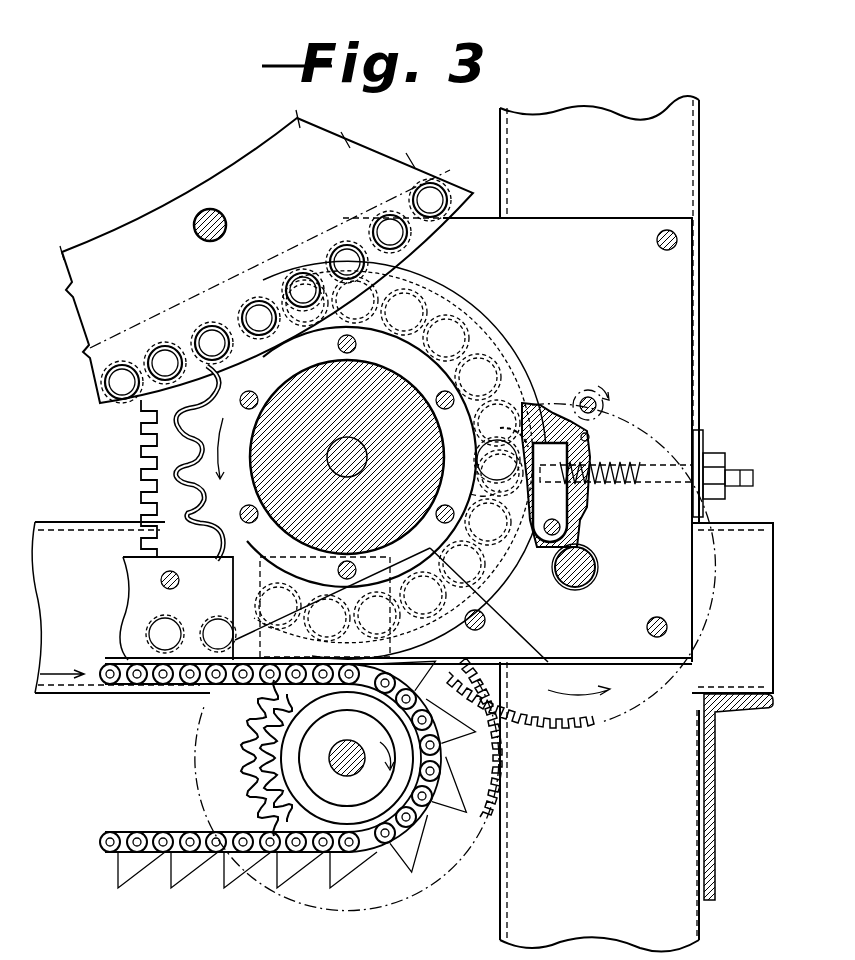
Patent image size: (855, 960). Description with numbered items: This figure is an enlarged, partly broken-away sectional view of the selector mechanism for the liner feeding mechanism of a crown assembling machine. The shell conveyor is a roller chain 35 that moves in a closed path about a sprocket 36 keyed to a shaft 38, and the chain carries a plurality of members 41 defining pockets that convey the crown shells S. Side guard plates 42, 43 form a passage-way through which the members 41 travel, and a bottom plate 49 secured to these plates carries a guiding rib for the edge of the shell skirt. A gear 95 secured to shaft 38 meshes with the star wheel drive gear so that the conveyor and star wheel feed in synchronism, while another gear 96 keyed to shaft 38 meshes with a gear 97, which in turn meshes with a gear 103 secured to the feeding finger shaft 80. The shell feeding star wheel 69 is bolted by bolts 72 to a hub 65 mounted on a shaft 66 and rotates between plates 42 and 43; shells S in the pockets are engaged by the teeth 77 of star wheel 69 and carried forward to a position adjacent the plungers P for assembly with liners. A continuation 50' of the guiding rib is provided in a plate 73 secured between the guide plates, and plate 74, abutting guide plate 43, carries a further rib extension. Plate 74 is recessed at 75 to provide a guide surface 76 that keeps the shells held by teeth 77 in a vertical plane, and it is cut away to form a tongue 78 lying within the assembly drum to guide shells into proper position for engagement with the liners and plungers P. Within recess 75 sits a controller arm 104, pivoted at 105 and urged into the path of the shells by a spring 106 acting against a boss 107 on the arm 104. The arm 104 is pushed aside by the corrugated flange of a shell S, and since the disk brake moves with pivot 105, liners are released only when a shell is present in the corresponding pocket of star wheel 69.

The tongue 78 is at (292, 258).
The plungers P is at (220, 335).
The plate 74 is at (477, 440).
The bolts 72 is at (250, 525).
The hub 65 is at (298, 385).
The shaft 66 is at (358, 458).
The shell feeding star wheel 69 is at (193, 478).
The side guard plate 42 is at (125, 566).
The side guard plate 43 is at (232, 602).
The shells S is at (165, 616).
The members 41 is at (214, 622).
The bottom plate 49 is at (115, 662).
The roller chain 35 is at (136, 838).
The shaft 38 is at (334, 762).
The sprocket 36 is at (243, 742).
The gear 95 is at (246, 800).
The gear 96 is at (486, 742).
The gear 97 is at (550, 722).
The plate 73 is at (482, 610).
The guiding rib continuation 50' is at (487, 635).
The controller arm 104 is at (556, 475).
The boss 107 is at (580, 512).
The pivot shaft 105 is at (558, 571).
The spring 106 is at (625, 485).
The gear 103 is at (600, 406).
The shaft 80 is at (578, 402).
The recess 75 is at (530, 405).
The guide surface 76 is at (488, 442).
The teeth 77 is at (484, 496).